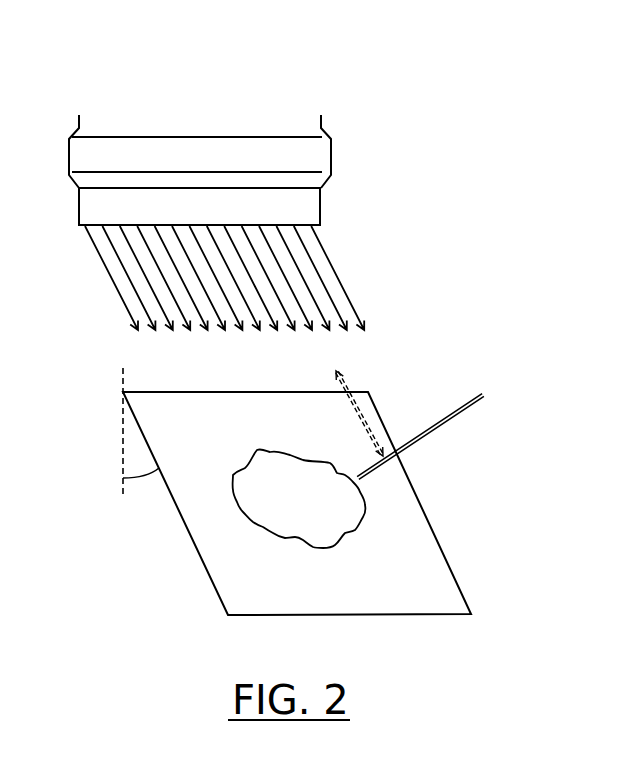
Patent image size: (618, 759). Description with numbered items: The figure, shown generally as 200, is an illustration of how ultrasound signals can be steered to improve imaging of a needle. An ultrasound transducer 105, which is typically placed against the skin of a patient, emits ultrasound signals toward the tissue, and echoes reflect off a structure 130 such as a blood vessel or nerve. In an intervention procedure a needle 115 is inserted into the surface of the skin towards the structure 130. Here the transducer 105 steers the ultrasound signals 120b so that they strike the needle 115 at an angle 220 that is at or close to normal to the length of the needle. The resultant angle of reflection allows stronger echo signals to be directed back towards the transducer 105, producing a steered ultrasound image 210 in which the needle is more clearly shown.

The illustration of steered ultrasound imaging 200 is at (292, 64).
The ultrasound transducer 105 is at (333, 138).
The steered ultrasound signals 120b is at (343, 250).
The steered ultrasound image 210 is at (205, 565).
The angle 220 is at (132, 440).
The structure 130 is at (326, 508).
The needle 115 is at (460, 418).